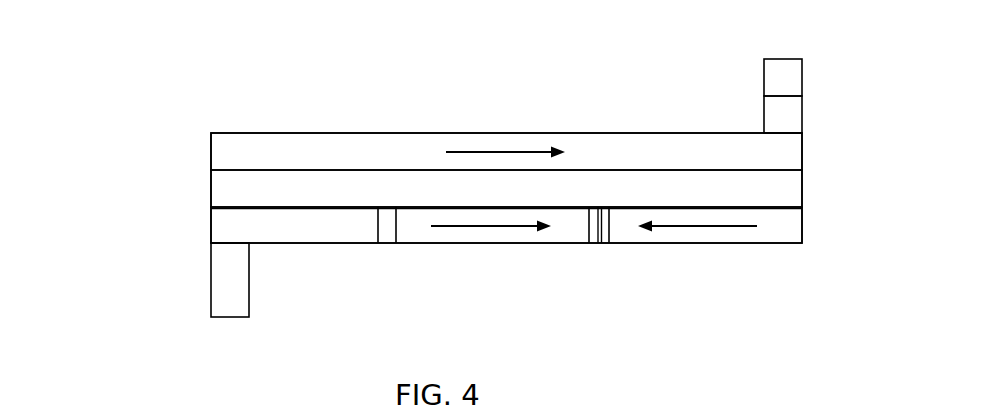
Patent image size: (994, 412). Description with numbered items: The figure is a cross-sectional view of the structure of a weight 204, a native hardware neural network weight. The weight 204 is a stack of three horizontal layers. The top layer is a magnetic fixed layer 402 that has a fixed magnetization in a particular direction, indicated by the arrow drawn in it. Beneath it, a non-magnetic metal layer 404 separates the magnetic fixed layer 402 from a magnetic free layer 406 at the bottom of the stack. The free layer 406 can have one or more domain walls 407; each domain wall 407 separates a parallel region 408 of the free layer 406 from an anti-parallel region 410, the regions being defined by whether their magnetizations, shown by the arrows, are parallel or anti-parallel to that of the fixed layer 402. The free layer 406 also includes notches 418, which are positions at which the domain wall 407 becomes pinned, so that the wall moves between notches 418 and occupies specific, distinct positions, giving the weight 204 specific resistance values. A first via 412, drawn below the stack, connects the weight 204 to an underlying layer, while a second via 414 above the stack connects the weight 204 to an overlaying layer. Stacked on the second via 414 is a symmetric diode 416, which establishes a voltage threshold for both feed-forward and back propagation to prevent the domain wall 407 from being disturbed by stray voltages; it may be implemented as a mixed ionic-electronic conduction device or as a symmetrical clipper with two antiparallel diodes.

The weight 204 is at (270, 52).
The magnetic fixed layer 402 is at (211, 151).
The non-magnetic metal layer 404 is at (211, 187).
The magnetic free layer 406 is at (211, 224).
The domain wall 407 is at (602, 243).
The parallel region 408 is at (470, 244).
The anti-parallel region 410 is at (700, 243).
The first via 412 is at (211, 279).
The second via 414 is at (764, 117).
The symmetric diode 416 is at (764, 79).
The notch 418 is at (390, 244).